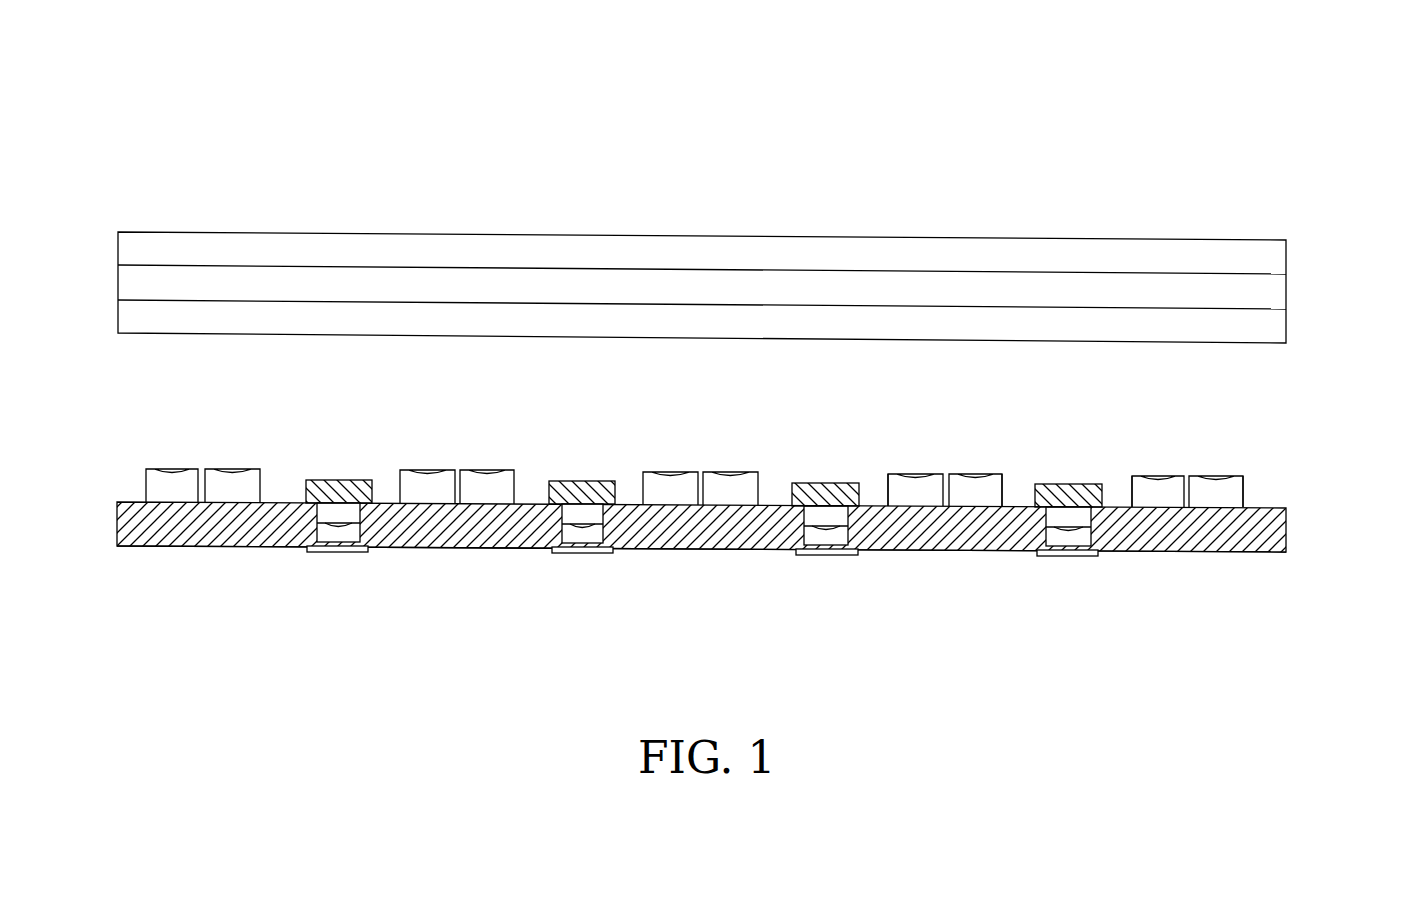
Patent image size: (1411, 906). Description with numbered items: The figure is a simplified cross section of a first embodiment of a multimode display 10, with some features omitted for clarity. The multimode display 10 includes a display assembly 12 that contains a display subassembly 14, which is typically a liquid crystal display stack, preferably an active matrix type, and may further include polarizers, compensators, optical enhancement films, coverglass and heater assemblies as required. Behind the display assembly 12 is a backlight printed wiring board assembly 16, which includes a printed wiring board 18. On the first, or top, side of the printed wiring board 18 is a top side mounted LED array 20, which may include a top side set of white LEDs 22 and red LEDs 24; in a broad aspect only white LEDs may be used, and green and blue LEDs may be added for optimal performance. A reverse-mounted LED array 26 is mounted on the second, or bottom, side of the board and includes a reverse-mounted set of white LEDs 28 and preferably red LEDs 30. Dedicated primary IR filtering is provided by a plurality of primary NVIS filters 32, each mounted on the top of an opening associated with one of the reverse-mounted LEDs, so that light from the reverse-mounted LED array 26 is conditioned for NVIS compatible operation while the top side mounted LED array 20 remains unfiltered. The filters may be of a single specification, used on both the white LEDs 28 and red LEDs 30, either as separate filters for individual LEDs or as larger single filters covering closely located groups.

The multimode display 10 is at (138, 192).
The display assembly 12 is at (1306, 249).
The display subassembly 14 is at (1292, 301).
The backlight printed wiring board assembly 16 is at (1304, 509).
The printed wiring board 18 is at (1288, 541).
The top side mounted LED array 20 is at (918, 465).
The white LEDs 22 is at (1004, 487).
The red LEDs 24 is at (888, 485).
The reverse-mounted LED array 26 is at (601, 559).
The reverse-mounted white LEDs 28 is at (572, 554).
The reverse-mounted red LEDs 30 is at (340, 553).
The primary NVIS filters 32 is at (338, 479).